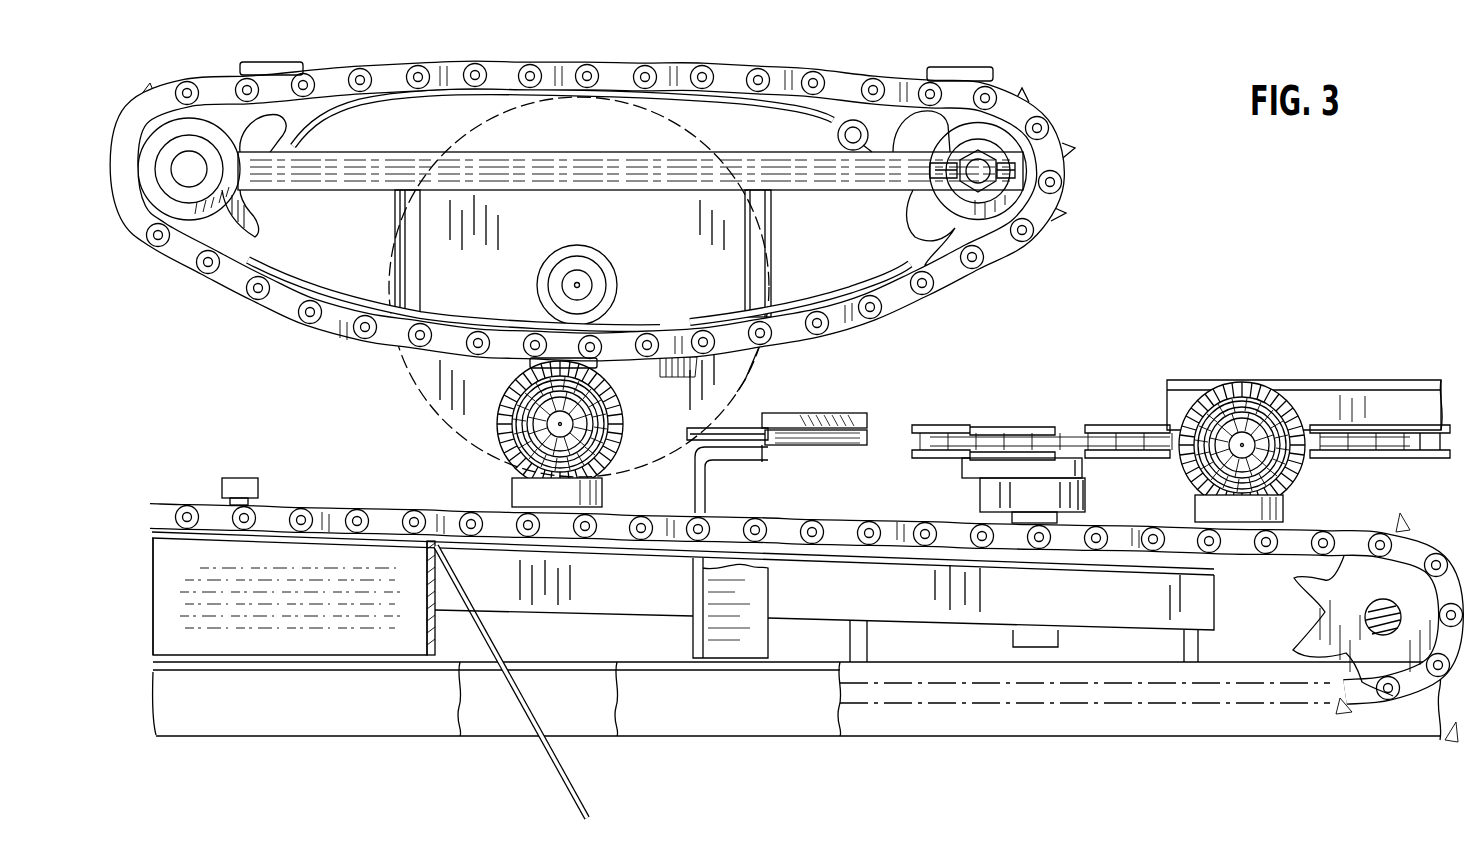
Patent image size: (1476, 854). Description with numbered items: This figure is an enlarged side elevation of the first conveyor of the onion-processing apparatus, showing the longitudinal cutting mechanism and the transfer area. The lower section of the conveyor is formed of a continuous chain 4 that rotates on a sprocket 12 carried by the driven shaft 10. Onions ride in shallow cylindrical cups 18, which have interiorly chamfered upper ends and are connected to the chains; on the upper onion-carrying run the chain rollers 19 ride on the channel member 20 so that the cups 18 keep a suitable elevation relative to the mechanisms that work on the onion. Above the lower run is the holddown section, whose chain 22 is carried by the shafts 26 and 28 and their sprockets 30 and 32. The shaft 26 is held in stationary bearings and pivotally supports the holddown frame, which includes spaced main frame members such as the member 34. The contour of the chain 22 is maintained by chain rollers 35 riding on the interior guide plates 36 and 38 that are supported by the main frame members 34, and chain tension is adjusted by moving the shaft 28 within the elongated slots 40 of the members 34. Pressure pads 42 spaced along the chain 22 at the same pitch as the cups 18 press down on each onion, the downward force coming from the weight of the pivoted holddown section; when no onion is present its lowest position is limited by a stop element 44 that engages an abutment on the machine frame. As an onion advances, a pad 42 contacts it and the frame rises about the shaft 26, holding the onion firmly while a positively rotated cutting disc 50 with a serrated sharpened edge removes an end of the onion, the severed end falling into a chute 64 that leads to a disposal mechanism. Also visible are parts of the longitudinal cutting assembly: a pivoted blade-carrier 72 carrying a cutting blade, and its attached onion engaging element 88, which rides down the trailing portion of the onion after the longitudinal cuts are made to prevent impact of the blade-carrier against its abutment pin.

The continuous chain 4 is at (738, 523).
The shaft 10 is at (1385, 600).
The sprocket 12 is at (1322, 615).
The cylindrical cup 18 is at (603, 497).
The chain roller 19 is at (590, 545).
The channel member 20 is at (605, 550).
The chain 22 is at (846, 324).
The shaft 26 is at (180, 178).
The shaft 28 is at (931, 168).
The sprocket 30 is at (250, 212).
The sprocket 32 is at (935, 235).
The main frame member 34 is at (756, 152).
The chain roller 35 is at (690, 367).
The interior guide plate 36 is at (346, 105).
The interior guide plate 38 is at (300, 262).
The elongated slot 40 is at (1052, 147).
The pressure pad 42 is at (270, 64).
The stop element 44 is at (863, 130).
The cutting disc 50 is at (438, 412).
The chute 64 is at (465, 604).
The blade-carrier 72 is at (797, 412).
The onion engaging element 88 is at (850, 415).